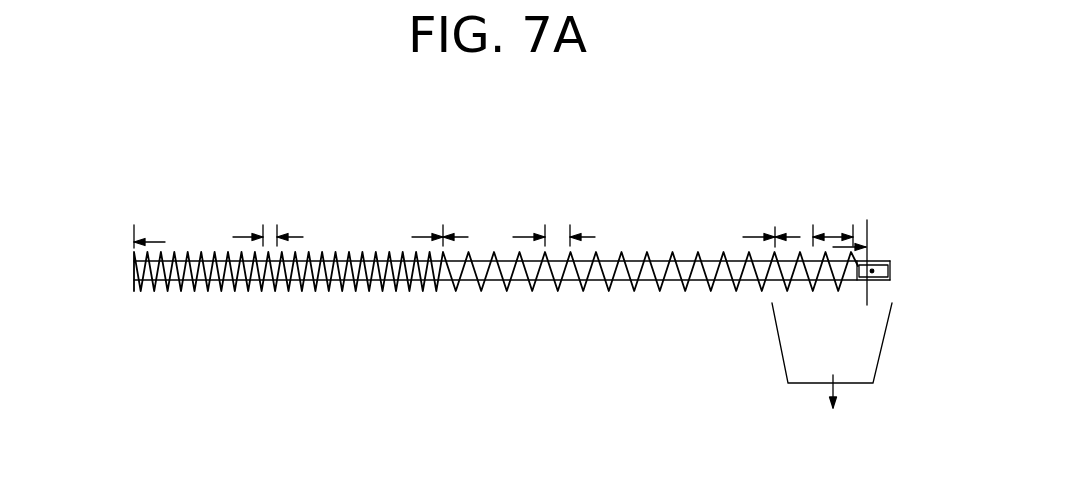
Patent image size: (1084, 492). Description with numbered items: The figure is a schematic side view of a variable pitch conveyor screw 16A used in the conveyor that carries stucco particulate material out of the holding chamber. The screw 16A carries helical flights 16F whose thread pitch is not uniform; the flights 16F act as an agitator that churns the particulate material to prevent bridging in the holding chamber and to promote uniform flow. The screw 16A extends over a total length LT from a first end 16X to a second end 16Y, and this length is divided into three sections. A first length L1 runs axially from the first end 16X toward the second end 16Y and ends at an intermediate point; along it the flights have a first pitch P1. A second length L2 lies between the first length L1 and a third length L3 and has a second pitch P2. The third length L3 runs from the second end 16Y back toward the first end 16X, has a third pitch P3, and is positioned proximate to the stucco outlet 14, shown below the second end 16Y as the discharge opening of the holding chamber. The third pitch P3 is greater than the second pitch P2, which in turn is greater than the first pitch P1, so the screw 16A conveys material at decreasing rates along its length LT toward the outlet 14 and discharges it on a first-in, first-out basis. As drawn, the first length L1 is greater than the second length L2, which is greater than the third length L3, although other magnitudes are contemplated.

The screw 16A is at (521, 220).
The helical flights 16F is at (497, 293).
The first end 16X is at (123, 225).
The second end 16Y is at (885, 244).
The stucco outlet 14 is at (773, 359).
The first length L1 is at (157, 242).
The first pitch P1 is at (303, 237).
The second length L2 is at (468, 237).
The second pitch P2 is at (595, 237).
The third length L3 is at (800, 237).
The third pitch P3 is at (834, 237).
The length LT is at (861, 293).